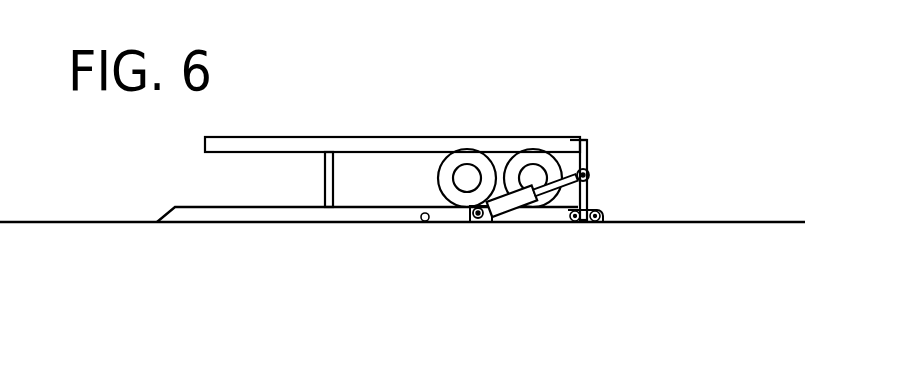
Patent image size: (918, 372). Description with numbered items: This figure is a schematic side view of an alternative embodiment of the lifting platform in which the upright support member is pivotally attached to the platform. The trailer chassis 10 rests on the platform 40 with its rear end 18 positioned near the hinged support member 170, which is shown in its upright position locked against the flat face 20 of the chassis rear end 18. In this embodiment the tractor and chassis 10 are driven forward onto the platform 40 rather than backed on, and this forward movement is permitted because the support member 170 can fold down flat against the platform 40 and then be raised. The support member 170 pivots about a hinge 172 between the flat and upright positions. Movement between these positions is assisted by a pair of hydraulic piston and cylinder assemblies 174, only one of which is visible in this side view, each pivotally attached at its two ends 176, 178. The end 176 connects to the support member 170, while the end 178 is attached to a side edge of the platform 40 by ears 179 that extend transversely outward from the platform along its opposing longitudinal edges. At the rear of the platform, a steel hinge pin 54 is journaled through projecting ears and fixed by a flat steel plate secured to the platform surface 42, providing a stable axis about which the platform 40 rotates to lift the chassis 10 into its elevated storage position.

The cargo container chassis 10 is at (419, 118).
The rear end 18 is at (547, 137).
The flat face 20 is at (580, 141).
The platform 40 is at (290, 217).
The platform surface 42 is at (767, 222).
The steel hinge pin 54 is at (604, 215).
The hinged support member 170 is at (588, 152).
The hinge 172 is at (578, 222).
The hydraulic piston and cylinder assembly 174 is at (525, 218).
The end 176 is at (589, 172).
The end 178 is at (485, 223).
The ears 179 is at (470, 223).